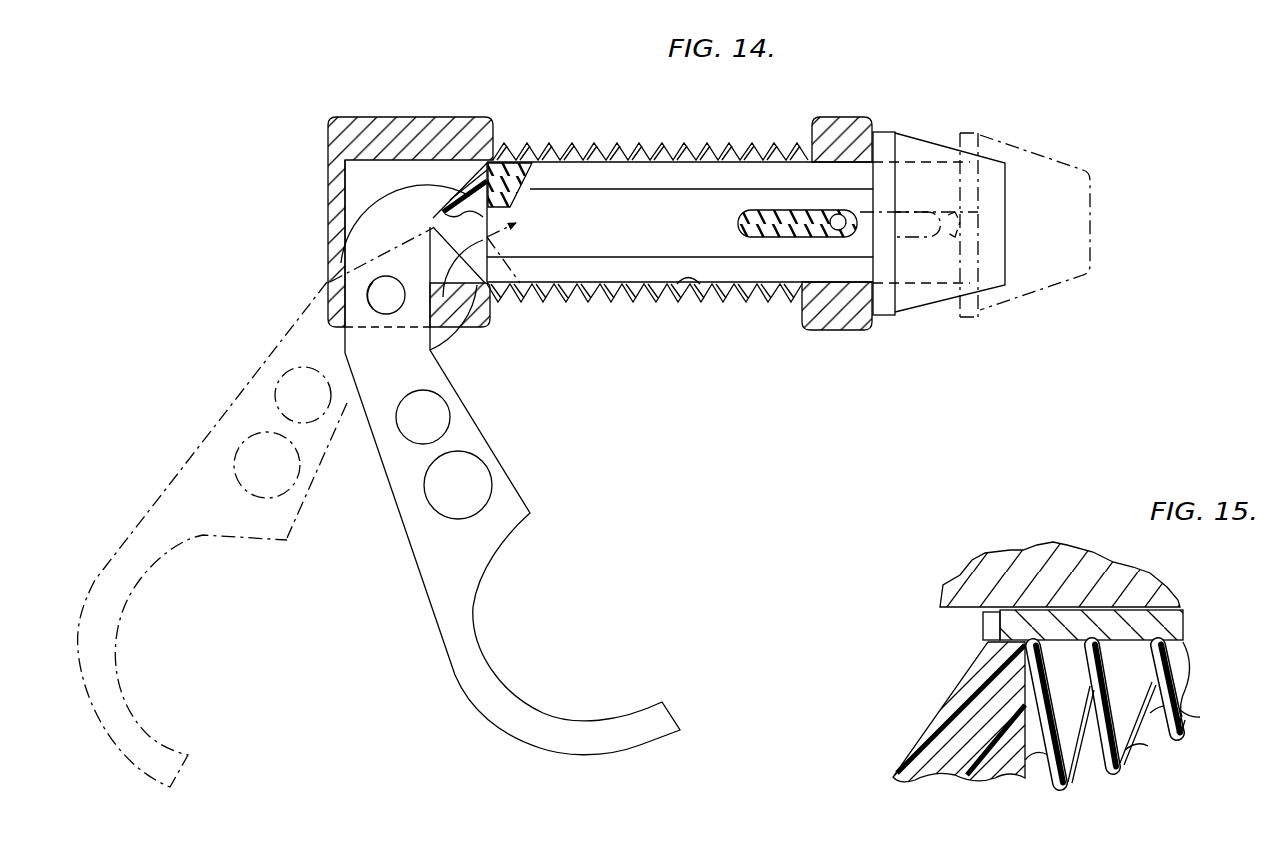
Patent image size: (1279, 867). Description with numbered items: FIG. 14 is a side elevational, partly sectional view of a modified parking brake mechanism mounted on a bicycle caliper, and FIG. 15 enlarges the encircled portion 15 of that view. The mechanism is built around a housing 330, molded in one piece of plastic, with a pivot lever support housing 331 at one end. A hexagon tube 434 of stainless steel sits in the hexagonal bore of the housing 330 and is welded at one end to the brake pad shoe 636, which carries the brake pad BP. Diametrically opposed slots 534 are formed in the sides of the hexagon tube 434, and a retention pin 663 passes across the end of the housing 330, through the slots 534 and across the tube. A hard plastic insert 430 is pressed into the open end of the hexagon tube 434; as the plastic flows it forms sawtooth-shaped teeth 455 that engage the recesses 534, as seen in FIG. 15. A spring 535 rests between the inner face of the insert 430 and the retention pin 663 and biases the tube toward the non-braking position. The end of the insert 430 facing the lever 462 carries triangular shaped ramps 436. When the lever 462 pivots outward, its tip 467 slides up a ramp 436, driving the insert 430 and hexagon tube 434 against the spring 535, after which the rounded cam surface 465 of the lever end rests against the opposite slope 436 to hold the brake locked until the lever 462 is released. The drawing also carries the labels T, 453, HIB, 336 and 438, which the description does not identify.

In FIG. 14, the pivot lever support housing 331 is at (358, 128).
In FIG. 14, the rounded cam surface of lever tip 465 is at (440, 193).
In FIG. 14, the lever tip 467 is at (443, 210).
In FIG. 14, the threads T is at (630, 146).
In FIG. 14, the hexagon tube 434 is at (680, 222).
In FIG. 15, the hexagon tube 434 is at (1183, 617).
In FIG. 14, the spring 535 is at (814, 200).
In FIG. 15, the spring 535 is at (1182, 727).
In FIG. 14, the brake pad BP is at (975, 225).
In FIG. 14, the encircled portion 15 is at (440, 243).
In FIG. 14, the pivot hole 453 is at (366, 292).
In FIG. 14, the triangular shaped ramps 436 is at (448, 318).
In FIG. 15, the triangular shaped ramps 436 is at (930, 727).
In FIG. 14, the hub HIB is at (698, 286).
In FIG. 14, the slots 534 is at (763, 238).
In FIG. 15, the slots 534 is at (1020, 640).
In FIG. 14, the nut 336 is at (823, 330).
In FIG. 14, the retention pin 663 is at (846, 227).
In FIG. 14, the brake pad shoe 636 is at (885, 314).
In FIG. 14, the lever 462 is at (379, 473).
In FIG. 15, the sawtooth-shaped teeth 455 is at (1018, 640).
In FIG. 15, the housing 330 is at (1072, 562).
In FIG. 15, the shoulder 438 is at (988, 645).
In FIG. 15, the hard plastic insert 430 is at (958, 757).